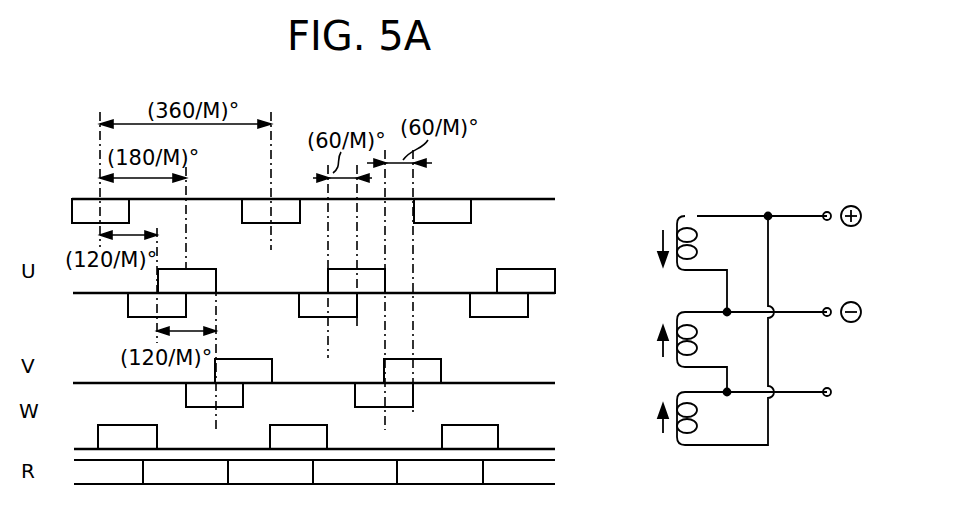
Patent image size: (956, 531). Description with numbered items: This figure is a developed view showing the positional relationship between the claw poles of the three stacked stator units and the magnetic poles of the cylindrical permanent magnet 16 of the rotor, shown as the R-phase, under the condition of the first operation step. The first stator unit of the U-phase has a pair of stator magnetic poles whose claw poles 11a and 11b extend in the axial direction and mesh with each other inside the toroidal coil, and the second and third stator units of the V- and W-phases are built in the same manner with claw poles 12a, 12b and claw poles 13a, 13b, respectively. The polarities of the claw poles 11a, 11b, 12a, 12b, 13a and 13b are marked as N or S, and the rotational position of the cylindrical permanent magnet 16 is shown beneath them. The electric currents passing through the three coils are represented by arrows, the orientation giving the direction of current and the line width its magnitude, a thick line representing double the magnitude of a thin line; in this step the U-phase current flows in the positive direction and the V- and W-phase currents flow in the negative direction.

The claw poles 11a is at (558, 215).
The claw poles 11b is at (560, 283).
The claw poles 12a is at (537, 307).
The claw poles 12b is at (535, 372).
The claw poles 13a is at (532, 400).
The claw poles 13b is at (532, 437).
The cylindrical permanent magnet 16 is at (557, 472).